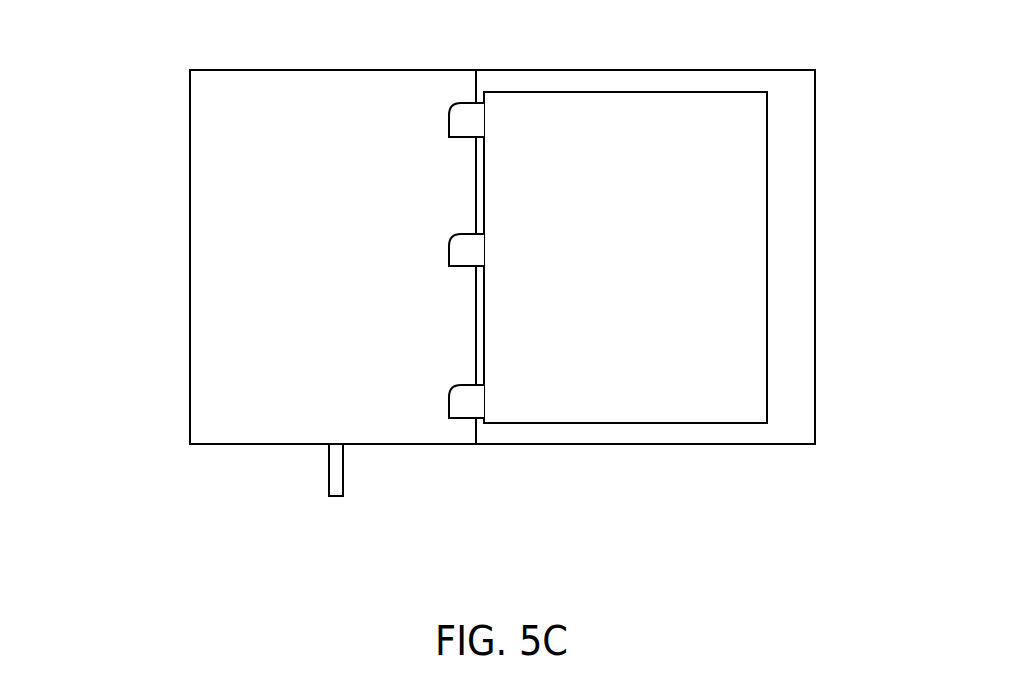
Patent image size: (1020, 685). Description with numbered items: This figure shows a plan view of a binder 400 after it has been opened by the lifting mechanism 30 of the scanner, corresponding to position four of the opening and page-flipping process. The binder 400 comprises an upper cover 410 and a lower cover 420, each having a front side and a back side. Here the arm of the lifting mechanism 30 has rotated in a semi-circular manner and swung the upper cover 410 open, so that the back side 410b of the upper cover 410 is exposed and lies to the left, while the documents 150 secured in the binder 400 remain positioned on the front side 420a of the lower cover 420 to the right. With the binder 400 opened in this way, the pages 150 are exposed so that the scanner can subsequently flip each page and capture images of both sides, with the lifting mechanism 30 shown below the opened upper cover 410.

The binder 400 is at (502, 253).
The pages 150 is at (629, 105).
The upper cover 410 is at (190, 323).
The back side of upper cover 410b is at (214, 257).
The lower cover 420 is at (815, 327).
The front side of lower cover 420a is at (793, 257).
The lifting mechanism 30 is at (329, 468).